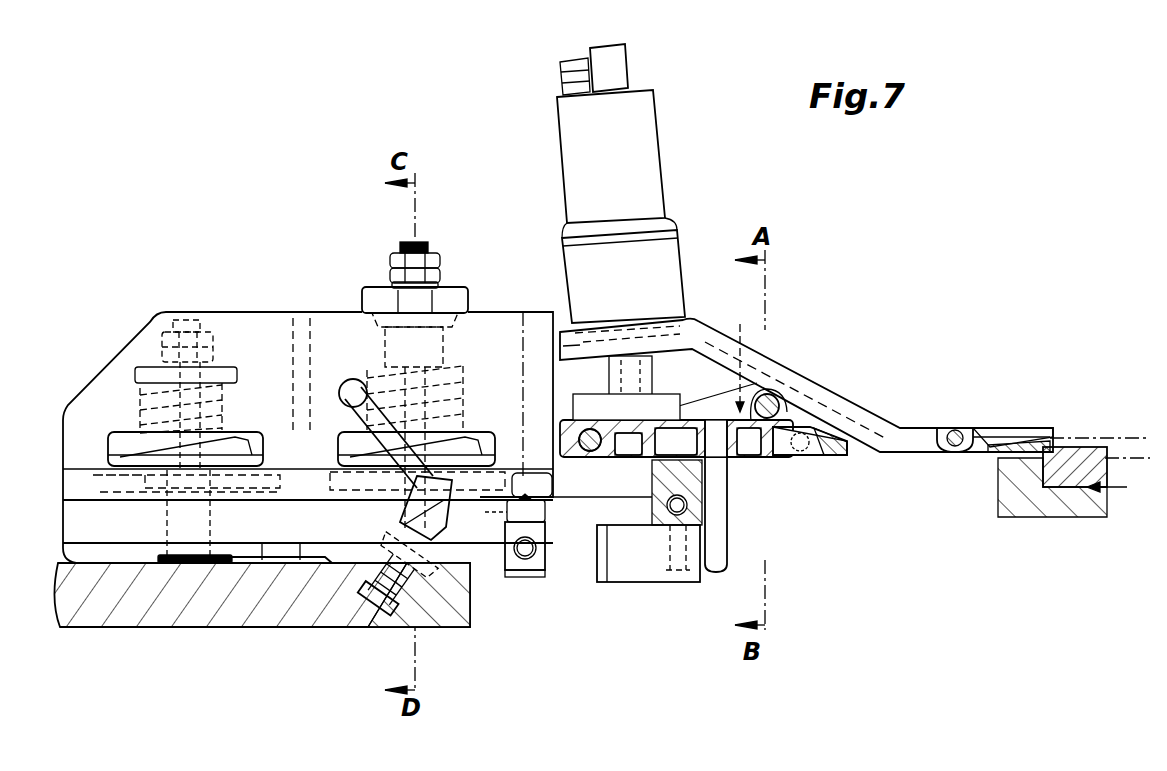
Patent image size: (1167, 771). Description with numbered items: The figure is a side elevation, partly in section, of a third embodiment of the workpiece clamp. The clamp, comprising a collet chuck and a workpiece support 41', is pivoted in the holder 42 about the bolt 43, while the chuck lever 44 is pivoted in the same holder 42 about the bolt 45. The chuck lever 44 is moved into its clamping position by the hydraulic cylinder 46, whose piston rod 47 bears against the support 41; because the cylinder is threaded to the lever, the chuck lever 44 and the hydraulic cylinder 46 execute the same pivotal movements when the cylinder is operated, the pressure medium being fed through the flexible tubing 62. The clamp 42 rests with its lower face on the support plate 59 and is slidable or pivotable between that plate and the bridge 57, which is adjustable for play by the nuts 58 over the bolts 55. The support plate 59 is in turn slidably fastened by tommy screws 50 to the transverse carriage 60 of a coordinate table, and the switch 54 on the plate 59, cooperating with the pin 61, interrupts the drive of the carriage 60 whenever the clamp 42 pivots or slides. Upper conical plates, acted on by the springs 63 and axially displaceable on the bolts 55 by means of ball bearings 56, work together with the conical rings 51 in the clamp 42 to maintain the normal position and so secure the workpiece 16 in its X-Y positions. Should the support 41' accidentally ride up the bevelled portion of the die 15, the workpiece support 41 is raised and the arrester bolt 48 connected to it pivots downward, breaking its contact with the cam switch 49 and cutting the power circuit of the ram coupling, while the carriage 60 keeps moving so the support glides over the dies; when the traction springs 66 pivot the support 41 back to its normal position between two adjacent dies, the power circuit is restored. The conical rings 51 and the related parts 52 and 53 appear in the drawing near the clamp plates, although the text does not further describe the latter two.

The die 15 is at (1082, 452).
The workpiece 16 is at (1122, 444).
The workpiece support 41 is at (817, 464).
The workpiece support 41' is at (1007, 465).
The holder 42 is at (212, 322).
The bolt 43 is at (590, 446).
The chuck lever 44 is at (825, 392).
The bolt 45 is at (957, 446).
The hydraulic cylinder 46 is at (650, 156).
The piston rod 47 is at (650, 360).
The arrester bolt 48 is at (722, 535).
The cam switch 49 is at (653, 574).
The tommy screws 50 is at (440, 513).
The conical rings 51 is at (268, 472).
The guide slot 52 is at (342, 480).
The fastening screw 53 is at (772, 396).
The switch 54 is at (741, 322).
The bolts 55 is at (422, 246).
The ball bearings 56 is at (433, 402).
The bridge 57 is at (372, 302).
The nuts 58 is at (398, 280).
The support plate 59 is at (143, 560).
The transverse carriage 60 is at (452, 612).
The pin 61 is at (532, 518).
The flexible tubing 62 is at (550, 78).
The springs 63 is at (313, 418).
The traction springs 66 is at (717, 475).